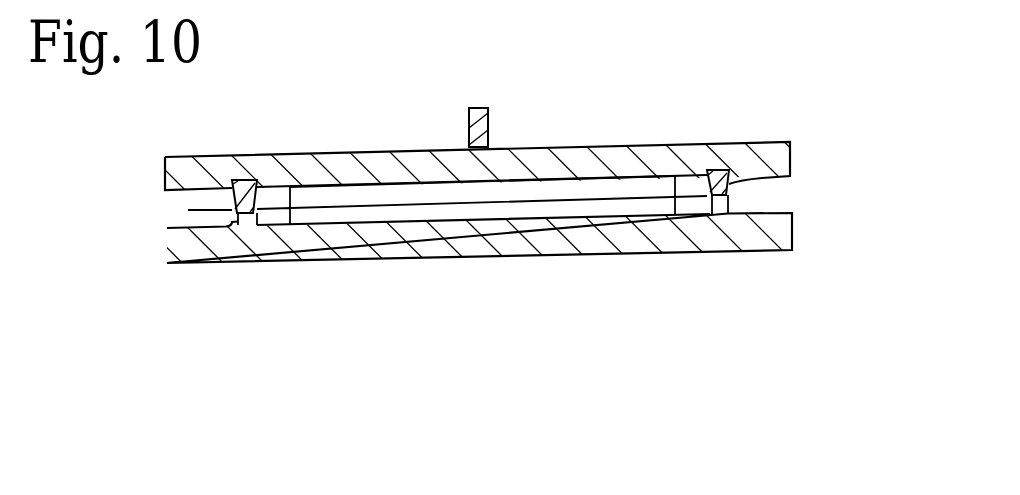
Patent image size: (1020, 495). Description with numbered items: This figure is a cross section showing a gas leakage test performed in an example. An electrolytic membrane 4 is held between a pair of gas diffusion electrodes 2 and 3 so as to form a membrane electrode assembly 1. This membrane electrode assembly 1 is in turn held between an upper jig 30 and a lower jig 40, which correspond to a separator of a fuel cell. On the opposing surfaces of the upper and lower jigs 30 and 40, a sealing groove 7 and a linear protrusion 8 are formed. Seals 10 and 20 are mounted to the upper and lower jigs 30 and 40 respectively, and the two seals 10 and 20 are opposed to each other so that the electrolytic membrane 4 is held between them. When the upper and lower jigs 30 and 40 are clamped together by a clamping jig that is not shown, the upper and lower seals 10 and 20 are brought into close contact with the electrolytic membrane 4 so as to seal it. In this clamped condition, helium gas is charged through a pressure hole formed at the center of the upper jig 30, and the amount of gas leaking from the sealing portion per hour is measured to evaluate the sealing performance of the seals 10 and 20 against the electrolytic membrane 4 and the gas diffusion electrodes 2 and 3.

The membrane electrode assembly 1 is at (313, 186).
The gas diffusion electrode 2 is at (373, 197).
The gas diffusion electrode 3 is at (352, 217).
The electrolytic membrane 4 is at (562, 200).
The sealing groove 7 is at (235, 181).
The linear protrusion 8 is at (230, 227).
The seal 10 is at (758, 142).
The seal 20 is at (729, 193).
The upper jig 30 is at (650, 142).
The lower jig 40 is at (603, 253).